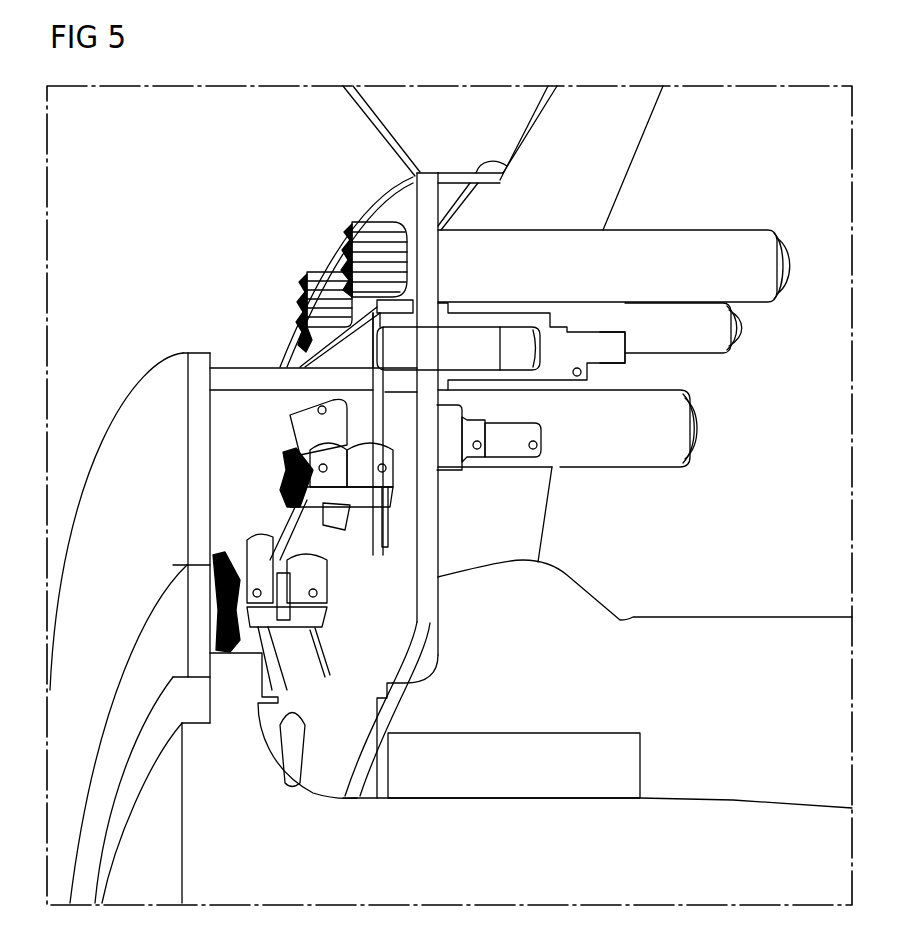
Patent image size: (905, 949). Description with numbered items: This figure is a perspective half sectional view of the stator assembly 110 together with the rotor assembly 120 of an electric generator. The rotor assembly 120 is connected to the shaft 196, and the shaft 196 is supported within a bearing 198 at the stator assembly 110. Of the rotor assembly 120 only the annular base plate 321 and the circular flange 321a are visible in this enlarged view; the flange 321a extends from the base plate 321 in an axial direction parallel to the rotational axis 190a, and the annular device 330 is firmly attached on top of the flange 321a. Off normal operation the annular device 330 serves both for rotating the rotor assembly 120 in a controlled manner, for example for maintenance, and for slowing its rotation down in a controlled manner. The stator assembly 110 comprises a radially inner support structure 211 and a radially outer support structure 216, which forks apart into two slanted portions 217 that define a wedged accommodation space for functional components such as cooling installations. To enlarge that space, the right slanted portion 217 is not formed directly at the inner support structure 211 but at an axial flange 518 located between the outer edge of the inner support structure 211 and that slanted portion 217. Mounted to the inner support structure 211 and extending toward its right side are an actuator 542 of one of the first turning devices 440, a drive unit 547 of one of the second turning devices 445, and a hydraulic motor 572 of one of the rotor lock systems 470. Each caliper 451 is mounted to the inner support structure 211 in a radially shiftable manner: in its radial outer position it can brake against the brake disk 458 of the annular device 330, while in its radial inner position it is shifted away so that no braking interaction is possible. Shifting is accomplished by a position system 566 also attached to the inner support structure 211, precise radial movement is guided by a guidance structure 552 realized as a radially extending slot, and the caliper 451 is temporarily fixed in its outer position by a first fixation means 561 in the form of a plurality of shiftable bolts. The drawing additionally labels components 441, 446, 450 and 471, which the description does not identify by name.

The stator assembly 110 is at (727, 522).
The rotor assembly 120 is at (128, 346).
The rotational axis 190a is at (507, 902).
The shaft 196 is at (467, 820).
The bearing 198 is at (627, 760).
The radially inner support structure 211 is at (430, 197).
The radially outer support structure 216 is at (424, 133).
The slanted portions 217 is at (378, 121).
The annular base plate 321 is at (230, 276).
The circular flange 321a is at (237, 382).
The annular device 330 is at (300, 308).
The first turning device 440 is at (806, 277).
The upper gear 441 is at (372, 230).
The second turning device 445 is at (762, 355).
The lower gear 446 is at (312, 268).
The clamp unit 450 is at (232, 518).
The caliper 451 is at (372, 515).
The brake disk 458 is at (317, 413).
The rotor lock system 470 is at (650, 370).
The piston 471 is at (465, 343).
The axial flange 518 is at (510, 166).
The actuator 542 is at (670, 253).
The drive unit 547 is at (720, 323).
The guidance structure 552 is at (393, 540).
The first fixation means 561 is at (287, 470).
The position system 566 is at (718, 430).
The hydraulic motor 572 is at (598, 343).